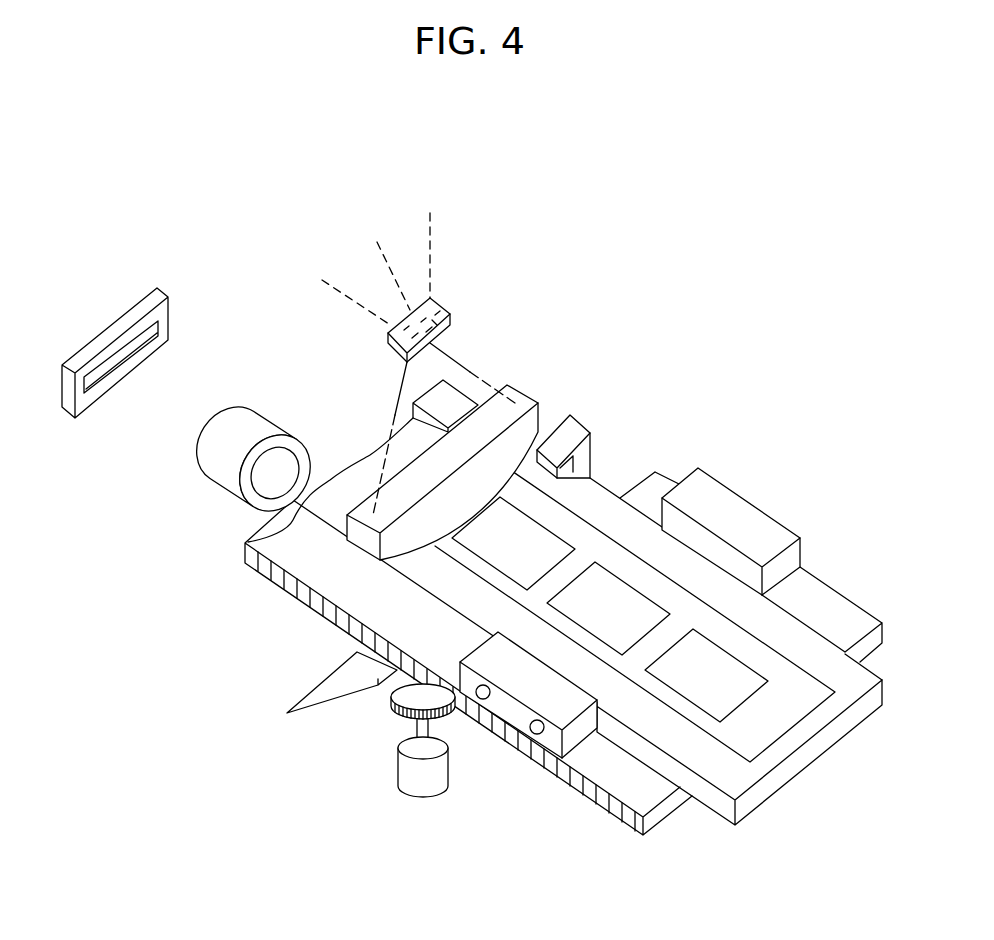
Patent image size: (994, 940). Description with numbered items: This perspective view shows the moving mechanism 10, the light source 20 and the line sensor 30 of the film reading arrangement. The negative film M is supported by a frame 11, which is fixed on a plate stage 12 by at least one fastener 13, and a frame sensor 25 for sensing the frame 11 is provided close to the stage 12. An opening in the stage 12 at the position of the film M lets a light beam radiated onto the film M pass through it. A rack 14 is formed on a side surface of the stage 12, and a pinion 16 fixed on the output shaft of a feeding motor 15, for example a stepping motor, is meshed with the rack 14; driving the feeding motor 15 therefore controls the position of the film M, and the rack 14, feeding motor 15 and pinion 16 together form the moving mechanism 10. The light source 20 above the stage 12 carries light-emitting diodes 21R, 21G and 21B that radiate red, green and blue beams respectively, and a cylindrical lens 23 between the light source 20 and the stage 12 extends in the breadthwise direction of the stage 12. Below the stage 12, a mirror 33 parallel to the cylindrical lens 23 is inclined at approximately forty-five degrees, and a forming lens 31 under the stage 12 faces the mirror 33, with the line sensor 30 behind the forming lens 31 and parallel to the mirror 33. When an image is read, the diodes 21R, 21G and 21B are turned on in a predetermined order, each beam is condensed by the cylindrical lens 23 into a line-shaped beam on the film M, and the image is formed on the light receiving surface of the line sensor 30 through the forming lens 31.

The moving mechanism 10 is at (426, 835).
The frame 11 is at (735, 778).
The plate stage 12 is at (623, 837).
The fastener 13 is at (728, 520).
The rack 14 is at (280, 578).
The feeding motor 15 is at (422, 775).
The pinion 16 is at (415, 702).
The light source 20 is at (440, 306).
The light-emitting diode 21R is at (429, 240).
The light-emitting diode 21G is at (379, 259).
The light-emitting diode 21B is at (342, 289).
The cylindrical lens 23 is at (517, 400).
The frame sensor 25 is at (567, 430).
The line sensor 30 is at (115, 328).
The forming lens 31 is at (223, 462).
The mirror 33 is at (333, 682).
The negative film M is at (780, 718).